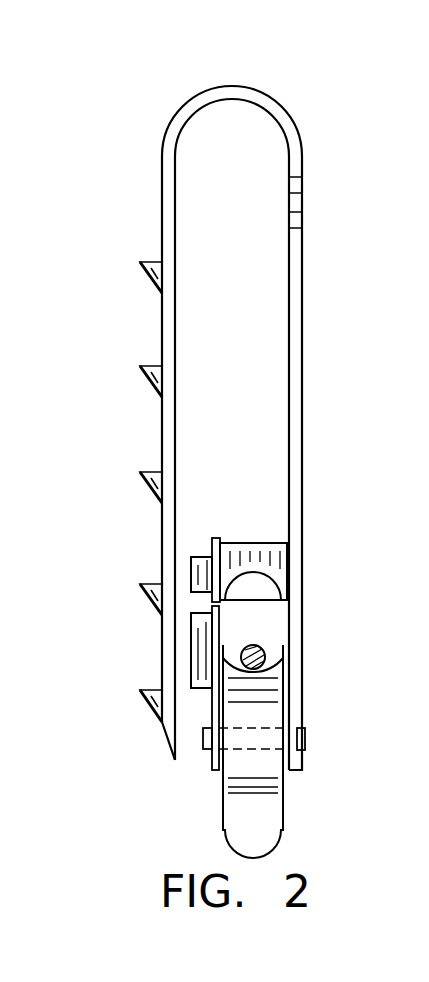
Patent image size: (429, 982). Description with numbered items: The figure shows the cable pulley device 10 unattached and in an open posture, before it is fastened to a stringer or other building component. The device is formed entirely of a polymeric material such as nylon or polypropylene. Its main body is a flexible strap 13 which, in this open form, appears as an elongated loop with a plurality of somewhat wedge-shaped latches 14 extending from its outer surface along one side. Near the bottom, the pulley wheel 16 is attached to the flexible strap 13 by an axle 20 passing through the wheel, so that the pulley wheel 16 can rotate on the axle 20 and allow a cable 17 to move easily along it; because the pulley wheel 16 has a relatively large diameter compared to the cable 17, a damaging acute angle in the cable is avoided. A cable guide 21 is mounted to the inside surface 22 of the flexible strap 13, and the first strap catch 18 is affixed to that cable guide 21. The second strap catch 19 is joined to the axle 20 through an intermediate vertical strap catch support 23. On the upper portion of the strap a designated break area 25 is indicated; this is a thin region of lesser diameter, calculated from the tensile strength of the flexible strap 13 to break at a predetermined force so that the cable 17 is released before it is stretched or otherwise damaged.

The cable pulley device 10 is at (153, 92).
The flexible strap 13 is at (300, 412).
The latches 14 is at (150, 362).
The pulley wheel 16 is at (285, 815).
The cable 17 is at (253, 645).
The first strap catch 18 is at (199, 555).
The second strap catch 19 is at (200, 653).
The axle 20 is at (305, 737).
The cable guide 21 is at (248, 541).
The inside surface 22 is at (287, 358).
The vertical strap catch support 23 is at (209, 706).
The designated break area 25 is at (277, 207).